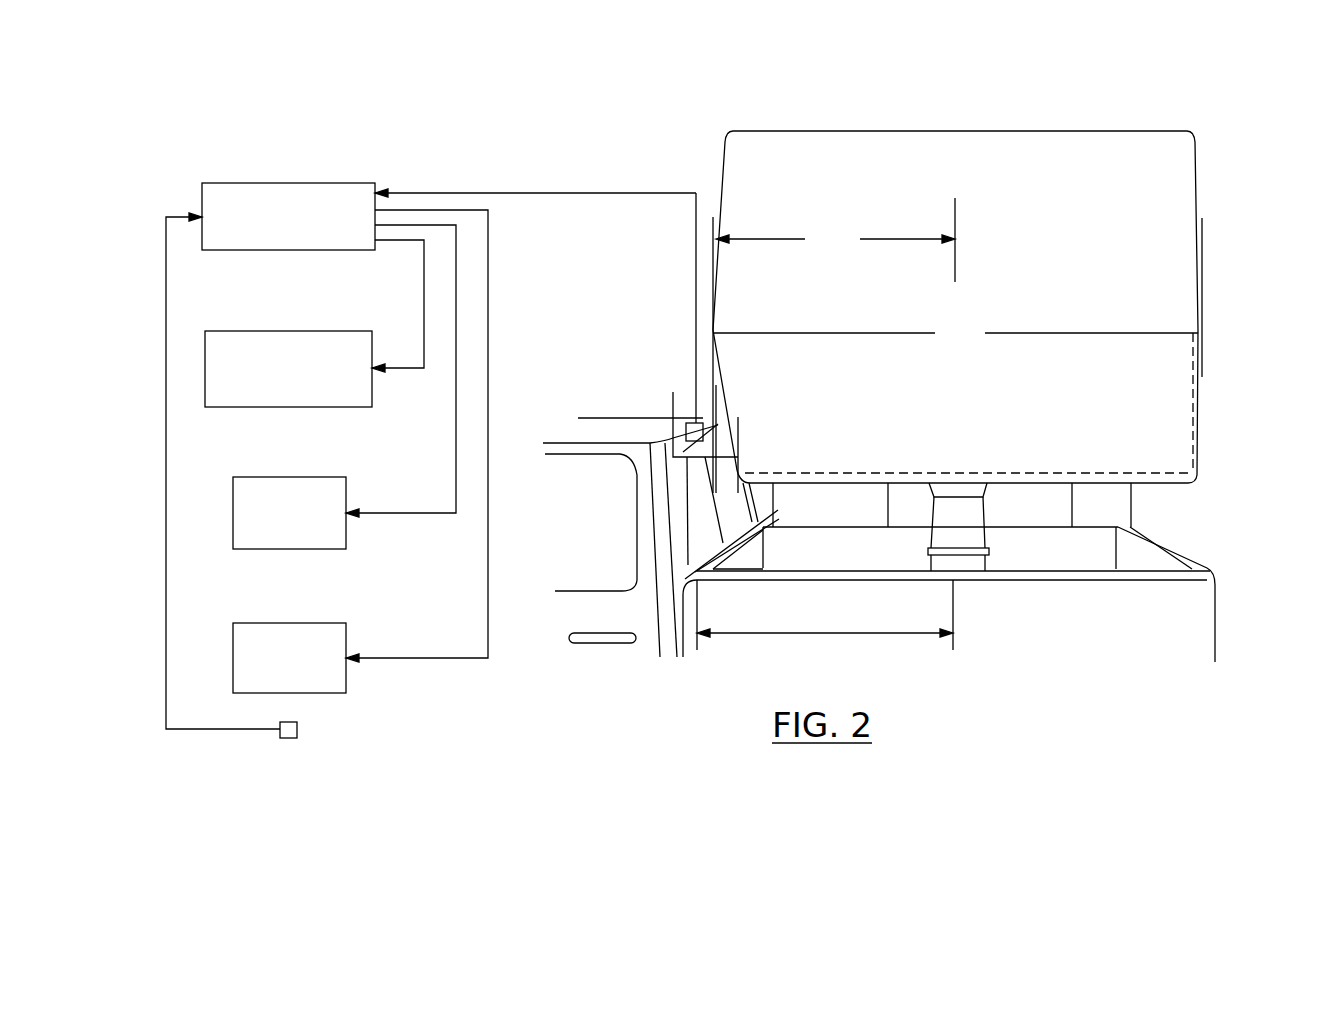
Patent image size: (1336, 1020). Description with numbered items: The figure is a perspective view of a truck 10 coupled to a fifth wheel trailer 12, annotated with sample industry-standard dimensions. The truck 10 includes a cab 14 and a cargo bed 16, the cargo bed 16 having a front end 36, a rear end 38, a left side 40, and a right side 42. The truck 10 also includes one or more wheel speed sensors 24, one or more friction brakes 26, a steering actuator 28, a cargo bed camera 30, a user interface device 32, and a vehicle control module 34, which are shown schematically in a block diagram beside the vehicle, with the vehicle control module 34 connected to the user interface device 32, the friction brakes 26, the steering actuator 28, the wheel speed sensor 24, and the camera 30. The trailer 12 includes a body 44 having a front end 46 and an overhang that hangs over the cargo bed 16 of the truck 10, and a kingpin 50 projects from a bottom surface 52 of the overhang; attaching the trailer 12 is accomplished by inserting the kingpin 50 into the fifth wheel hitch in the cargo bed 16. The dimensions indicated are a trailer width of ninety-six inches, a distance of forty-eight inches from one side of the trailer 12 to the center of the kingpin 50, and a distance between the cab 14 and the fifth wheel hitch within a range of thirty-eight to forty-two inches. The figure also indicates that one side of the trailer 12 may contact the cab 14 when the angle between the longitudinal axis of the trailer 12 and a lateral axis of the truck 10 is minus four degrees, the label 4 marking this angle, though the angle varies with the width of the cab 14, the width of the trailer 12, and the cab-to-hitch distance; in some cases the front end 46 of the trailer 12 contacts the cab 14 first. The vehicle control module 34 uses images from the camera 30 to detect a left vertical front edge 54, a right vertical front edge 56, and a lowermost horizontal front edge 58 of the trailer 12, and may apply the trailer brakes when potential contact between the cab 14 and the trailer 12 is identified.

The truck 10 is at (598, 322).
The fifth wheel trailer 12 is at (993, 250).
The cab 14 is at (603, 418).
The cargo bed 16 is at (1180, 598).
The wheel speed sensor 24 is at (290, 740).
The friction brakes 26 is at (257, 477).
The steering actuator 28 is at (260, 623).
The cargo bed camera 30 is at (705, 420).
The user interface device 32 is at (250, 331).
The vehicle control module 34 is at (240, 183).
The front end 36 is at (760, 520).
The rear end 38 is at (1138, 535).
The left side 40 is at (976, 602).
The right side 42 is at (1003, 540).
The body 44 is at (955, 131).
The front end 46 is at (1157, 222).
The kingpin 50 is at (960, 503).
The bottom surface 52 is at (888, 533).
The left vertical front edge 54 is at (1197, 395).
The right vertical front edge 56 is at (716, 397).
The lowermost horizontal front edge 58 is at (1068, 527).
The offset reference line 4 is at (929, 355).